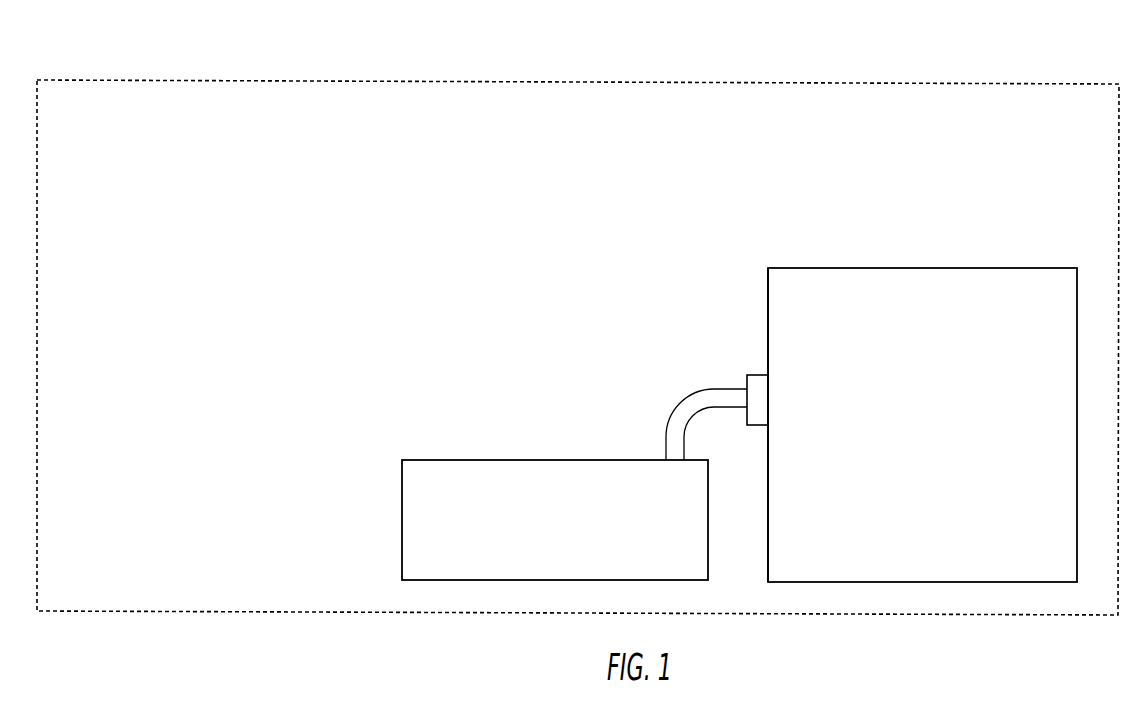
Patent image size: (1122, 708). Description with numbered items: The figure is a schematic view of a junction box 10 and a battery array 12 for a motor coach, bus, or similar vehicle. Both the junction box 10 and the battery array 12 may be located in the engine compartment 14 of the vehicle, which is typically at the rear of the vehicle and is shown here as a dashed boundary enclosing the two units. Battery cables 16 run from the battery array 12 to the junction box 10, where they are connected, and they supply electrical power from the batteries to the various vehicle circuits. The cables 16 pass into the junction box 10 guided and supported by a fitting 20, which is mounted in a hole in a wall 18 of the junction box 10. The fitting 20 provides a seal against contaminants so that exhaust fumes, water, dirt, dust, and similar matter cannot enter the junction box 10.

The junction box 10 is at (907, 262).
The battery array 12 is at (476, 459).
The engine compartment 14 is at (740, 78).
The battery cables 16 is at (690, 400).
The wall 18 is at (768, 309).
The fitting 20 is at (752, 425).